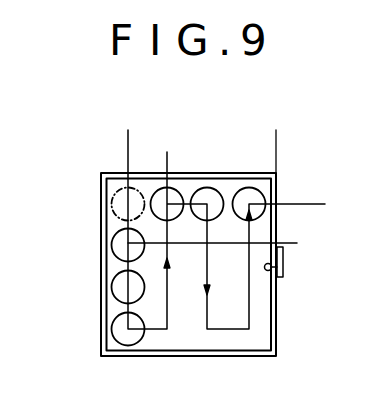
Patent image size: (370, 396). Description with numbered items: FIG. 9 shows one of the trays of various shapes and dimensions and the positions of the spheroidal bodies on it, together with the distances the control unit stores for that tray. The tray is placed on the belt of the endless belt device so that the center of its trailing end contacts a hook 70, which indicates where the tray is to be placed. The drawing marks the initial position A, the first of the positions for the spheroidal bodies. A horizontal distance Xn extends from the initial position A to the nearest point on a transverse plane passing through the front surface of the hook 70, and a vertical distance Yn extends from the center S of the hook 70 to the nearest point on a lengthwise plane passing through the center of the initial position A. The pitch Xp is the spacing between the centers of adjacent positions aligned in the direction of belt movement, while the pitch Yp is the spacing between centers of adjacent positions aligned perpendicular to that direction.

The initial position A is at (121, 193).
The pitch Xp is at (167, 152).
The horizontal distance Xn is at (276, 130).
The pitch Yp is at (290, 243).
The vertical distance Yn is at (319, 204).
The center of the hook S is at (284, 263).
The hook 70 is at (292, 290).